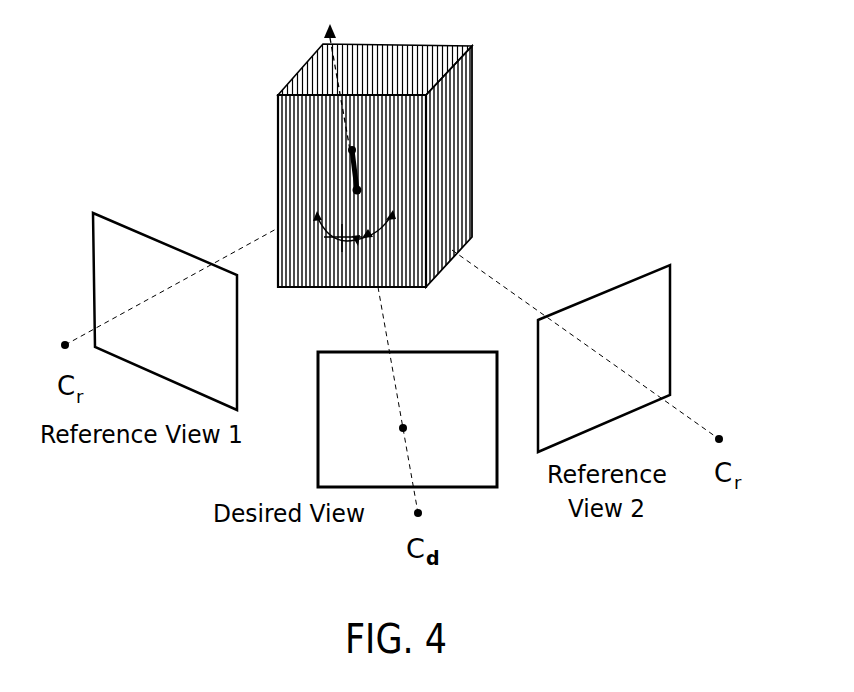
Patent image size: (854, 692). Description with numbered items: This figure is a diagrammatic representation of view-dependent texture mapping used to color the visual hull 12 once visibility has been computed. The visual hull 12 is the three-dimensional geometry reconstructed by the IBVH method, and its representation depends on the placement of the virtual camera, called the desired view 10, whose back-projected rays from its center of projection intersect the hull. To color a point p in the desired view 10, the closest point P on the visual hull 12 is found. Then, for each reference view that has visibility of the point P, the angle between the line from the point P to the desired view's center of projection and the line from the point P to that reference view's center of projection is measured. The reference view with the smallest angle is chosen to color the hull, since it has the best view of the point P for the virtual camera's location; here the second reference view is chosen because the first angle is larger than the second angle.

The desired view 10 is at (415, 445).
The visual hull 12 is at (403, 155).
The closest point on the hull P is at (342, 170).
The point in the desired view p is at (391, 428).